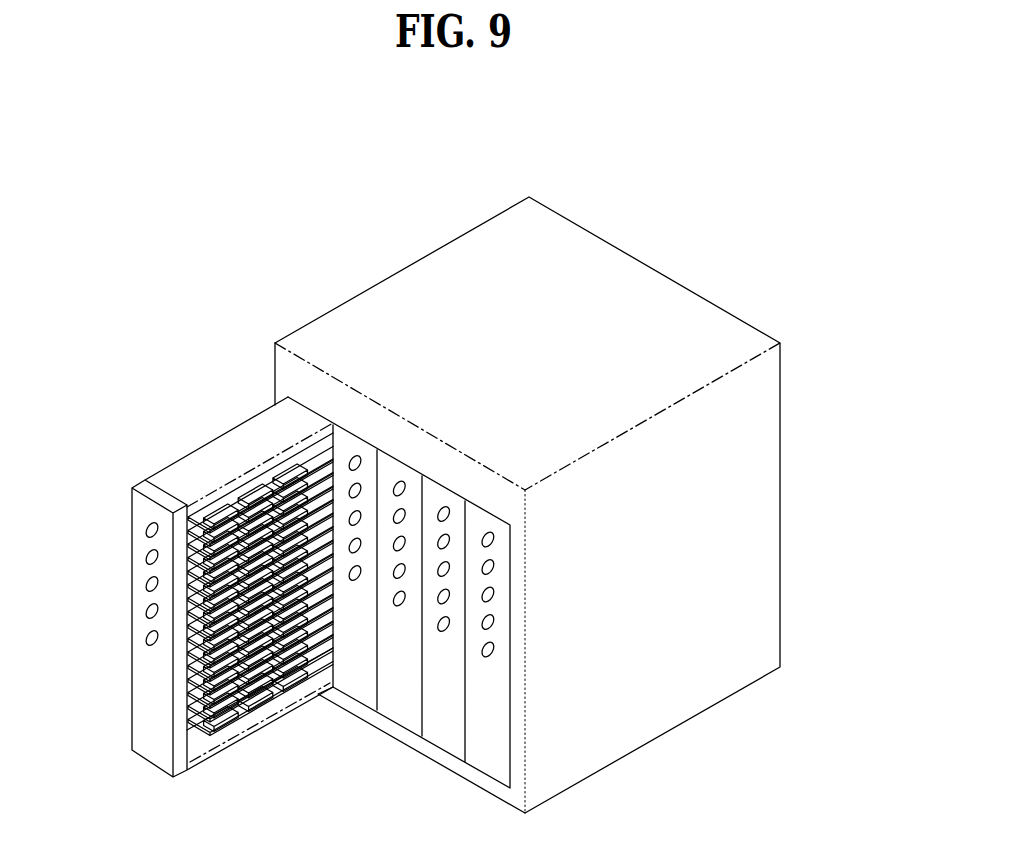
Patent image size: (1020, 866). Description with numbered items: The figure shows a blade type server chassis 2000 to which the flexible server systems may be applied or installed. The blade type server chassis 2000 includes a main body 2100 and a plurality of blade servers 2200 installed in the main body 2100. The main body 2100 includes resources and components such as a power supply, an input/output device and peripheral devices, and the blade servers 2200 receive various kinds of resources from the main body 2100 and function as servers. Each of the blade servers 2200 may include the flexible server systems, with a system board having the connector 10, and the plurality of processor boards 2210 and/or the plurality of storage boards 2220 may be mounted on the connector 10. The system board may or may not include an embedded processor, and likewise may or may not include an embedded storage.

The blade type server chassis 2000 is at (550, 104).
The main body 2100 is at (638, 268).
The blade server 2200 is at (183, 470).
The processor board 2210 is at (278, 488).
The storage board 2220 is at (247, 695).
The connector 10 is at (293, 452).